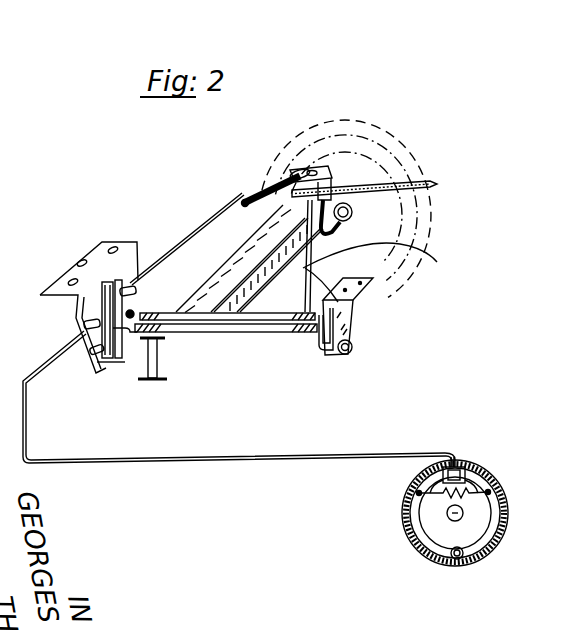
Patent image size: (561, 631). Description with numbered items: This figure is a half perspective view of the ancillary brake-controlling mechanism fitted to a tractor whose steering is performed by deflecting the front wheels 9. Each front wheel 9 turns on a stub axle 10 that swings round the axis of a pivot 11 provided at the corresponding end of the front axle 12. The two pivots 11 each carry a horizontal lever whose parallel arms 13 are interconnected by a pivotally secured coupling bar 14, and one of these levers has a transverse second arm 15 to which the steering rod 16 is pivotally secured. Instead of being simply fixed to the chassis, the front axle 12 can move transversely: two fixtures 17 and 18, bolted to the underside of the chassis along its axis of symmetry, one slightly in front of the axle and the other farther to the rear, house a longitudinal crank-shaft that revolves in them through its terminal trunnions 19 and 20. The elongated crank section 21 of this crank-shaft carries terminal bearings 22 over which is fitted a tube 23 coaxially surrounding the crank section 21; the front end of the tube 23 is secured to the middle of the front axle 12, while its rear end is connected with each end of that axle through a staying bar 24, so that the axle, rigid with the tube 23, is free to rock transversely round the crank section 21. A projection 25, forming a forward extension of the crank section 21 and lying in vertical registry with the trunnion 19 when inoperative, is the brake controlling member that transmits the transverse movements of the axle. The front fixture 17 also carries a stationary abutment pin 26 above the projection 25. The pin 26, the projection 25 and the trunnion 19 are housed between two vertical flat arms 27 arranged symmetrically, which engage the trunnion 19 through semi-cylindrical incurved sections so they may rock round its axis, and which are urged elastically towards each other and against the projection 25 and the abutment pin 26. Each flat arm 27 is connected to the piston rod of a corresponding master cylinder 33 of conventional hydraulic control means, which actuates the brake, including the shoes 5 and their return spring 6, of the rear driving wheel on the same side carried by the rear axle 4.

The rear axle 4 is at (462, 514).
The brake shoes 5 is at (410, 528).
The return spring 6 is at (445, 503).
The front wheel 9 is at (348, 160).
The stub axle 10 is at (338, 228).
The pivot 11 is at (322, 166).
The front axle 12 is at (245, 257).
The parallel arms 13 is at (302, 166).
The coupling bar 14 is at (250, 198).
The second arm 15 is at (383, 167).
The steering rod 16 is at (432, 182).
The front fixture 17 is at (119, 246).
The rear fixture 18 is at (356, 320).
The front trunnion 19 is at (115, 352).
The rear trunnion 20 is at (326, 352).
The crank section 21 is at (228, 334).
The terminal bearings 22 is at (170, 360).
The tube 23 is at (266, 312).
The staying bar 24 is at (437, 262).
The projection 25 is at (134, 310).
The abutment pin 26 is at (133, 280).
The vertical flat arms 27 is at (102, 270).
The master cylinder 33 is at (82, 323).